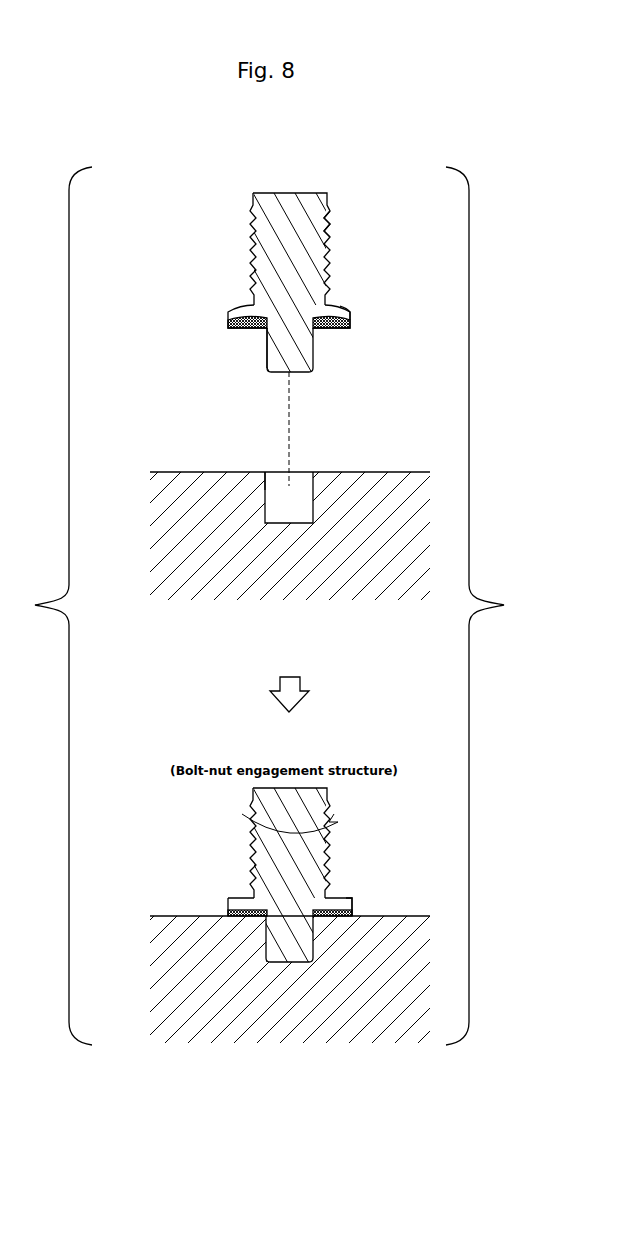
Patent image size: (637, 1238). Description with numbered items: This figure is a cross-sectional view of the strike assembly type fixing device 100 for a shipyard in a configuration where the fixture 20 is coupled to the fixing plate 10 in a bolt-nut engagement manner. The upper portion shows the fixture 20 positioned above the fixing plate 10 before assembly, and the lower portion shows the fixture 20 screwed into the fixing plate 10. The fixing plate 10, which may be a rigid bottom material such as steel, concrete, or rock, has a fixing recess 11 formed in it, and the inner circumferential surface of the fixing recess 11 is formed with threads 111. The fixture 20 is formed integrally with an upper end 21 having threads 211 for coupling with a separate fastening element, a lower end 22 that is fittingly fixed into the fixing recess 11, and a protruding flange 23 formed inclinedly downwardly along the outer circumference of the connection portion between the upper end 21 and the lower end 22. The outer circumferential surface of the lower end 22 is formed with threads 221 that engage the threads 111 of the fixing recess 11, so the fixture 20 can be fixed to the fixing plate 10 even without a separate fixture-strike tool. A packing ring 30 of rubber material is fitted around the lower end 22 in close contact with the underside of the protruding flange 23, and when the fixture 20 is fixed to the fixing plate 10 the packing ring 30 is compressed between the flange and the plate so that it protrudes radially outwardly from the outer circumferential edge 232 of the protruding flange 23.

The strike assembly type fixing device 100 is at (178, 189).
The fixing plate 10 is at (160, 514).
The fixing recess 11 is at (299, 510).
The threads 111 is at (266, 488).
The fixture 20 is at (244, 818).
The upper end 21 is at (333, 216).
The threads 211 is at (333, 244).
The lower end 22 is at (314, 352).
The threads 221 is at (266, 345).
The protruding flange 23 is at (230, 312).
The outer circumferential edge 232 is at (352, 313).
The packing ring 30 is at (353, 326).